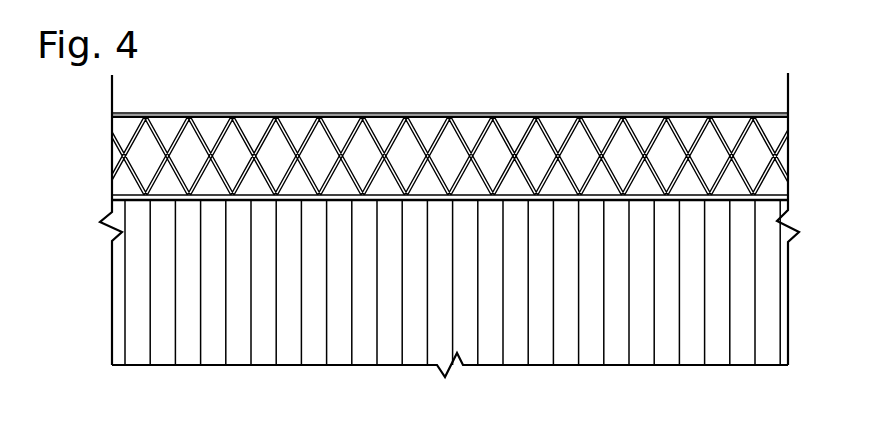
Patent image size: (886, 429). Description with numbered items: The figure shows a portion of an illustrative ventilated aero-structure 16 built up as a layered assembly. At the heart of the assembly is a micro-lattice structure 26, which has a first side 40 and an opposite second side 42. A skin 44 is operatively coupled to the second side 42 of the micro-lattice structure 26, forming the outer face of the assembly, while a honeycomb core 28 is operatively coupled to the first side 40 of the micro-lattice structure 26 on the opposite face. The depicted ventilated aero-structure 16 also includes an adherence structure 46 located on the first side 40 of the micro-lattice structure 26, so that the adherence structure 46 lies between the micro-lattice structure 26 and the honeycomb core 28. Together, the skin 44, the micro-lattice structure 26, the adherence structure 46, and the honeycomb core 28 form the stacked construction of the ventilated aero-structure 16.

The ventilated aero-structure 16 is at (683, 64).
The micro-lattice structure 26 is at (790, 149).
The honeycomb core 28 is at (792, 319).
The first side 40 is at (742, 206).
The second side 42 is at (274, 104).
The skin 44 is at (557, 113).
The adherence structure 46 is at (163, 202).